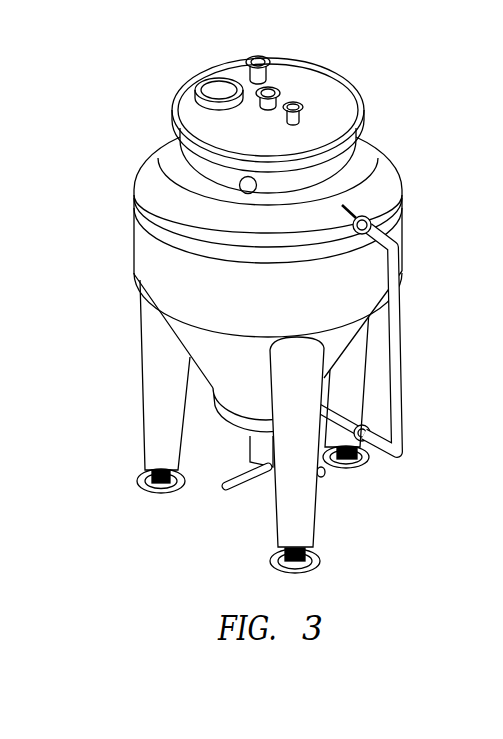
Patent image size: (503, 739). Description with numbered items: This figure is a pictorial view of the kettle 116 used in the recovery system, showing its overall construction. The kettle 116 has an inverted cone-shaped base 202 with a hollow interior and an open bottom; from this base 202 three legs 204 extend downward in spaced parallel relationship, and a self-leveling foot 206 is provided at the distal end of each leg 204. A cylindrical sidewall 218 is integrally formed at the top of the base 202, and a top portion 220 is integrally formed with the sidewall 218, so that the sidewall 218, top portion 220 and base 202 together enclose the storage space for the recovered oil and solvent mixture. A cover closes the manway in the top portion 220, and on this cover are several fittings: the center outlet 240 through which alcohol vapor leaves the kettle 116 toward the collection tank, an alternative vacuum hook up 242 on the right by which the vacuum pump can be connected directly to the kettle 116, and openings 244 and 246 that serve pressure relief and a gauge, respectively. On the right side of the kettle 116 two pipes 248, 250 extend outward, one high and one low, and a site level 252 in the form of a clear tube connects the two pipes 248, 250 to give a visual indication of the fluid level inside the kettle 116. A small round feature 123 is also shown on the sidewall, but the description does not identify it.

The kettle 116 is at (138, 118).
The sensor port 123 is at (231, 189).
The inverted cone-shaped base 202 is at (364, 336).
The legs 204 is at (140, 373).
The self-leveling foot 206 is at (127, 468).
The cylindrical sidewall 218 is at (138, 247).
The top portion 220 is at (159, 171).
The outlet 240 is at (285, 76).
The alternative vacuum hook up 242 is at (314, 107).
The opening 244 is at (205, 81).
The opening 246 is at (242, 49).
The pipe 248 is at (367, 205).
The pipe 250 is at (341, 439).
The site level 252 is at (408, 330).